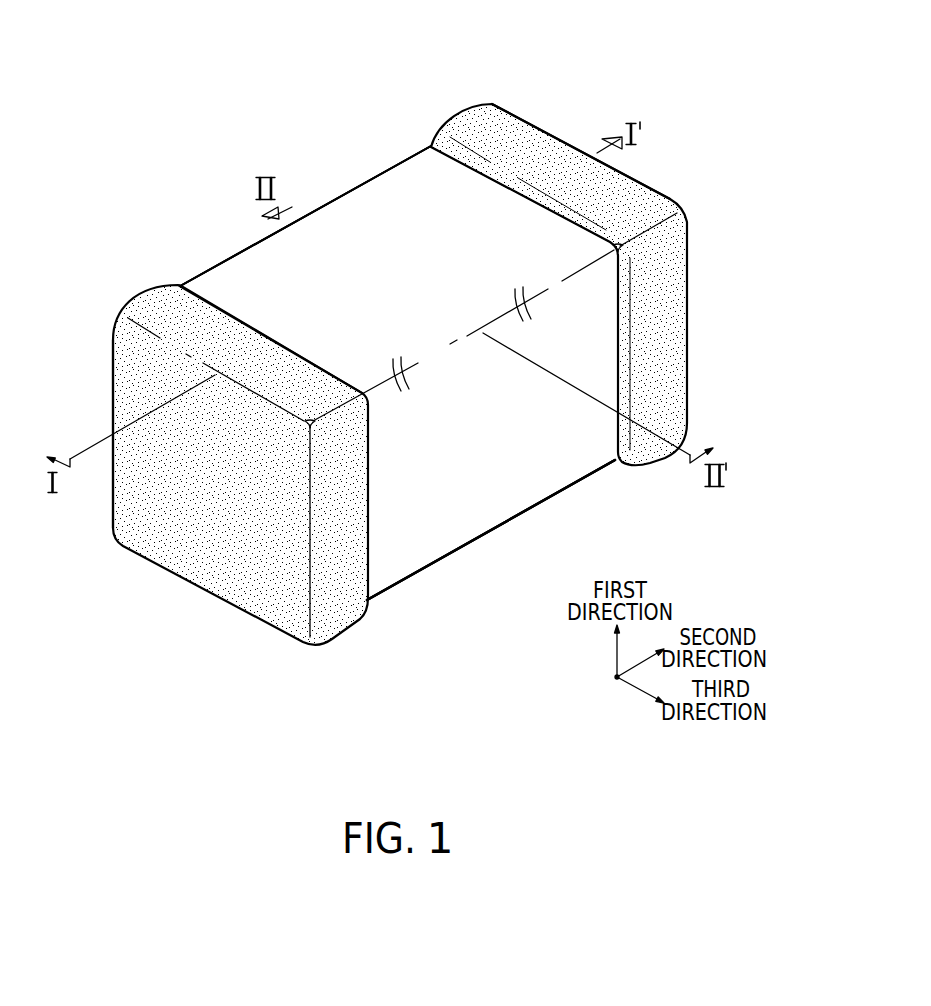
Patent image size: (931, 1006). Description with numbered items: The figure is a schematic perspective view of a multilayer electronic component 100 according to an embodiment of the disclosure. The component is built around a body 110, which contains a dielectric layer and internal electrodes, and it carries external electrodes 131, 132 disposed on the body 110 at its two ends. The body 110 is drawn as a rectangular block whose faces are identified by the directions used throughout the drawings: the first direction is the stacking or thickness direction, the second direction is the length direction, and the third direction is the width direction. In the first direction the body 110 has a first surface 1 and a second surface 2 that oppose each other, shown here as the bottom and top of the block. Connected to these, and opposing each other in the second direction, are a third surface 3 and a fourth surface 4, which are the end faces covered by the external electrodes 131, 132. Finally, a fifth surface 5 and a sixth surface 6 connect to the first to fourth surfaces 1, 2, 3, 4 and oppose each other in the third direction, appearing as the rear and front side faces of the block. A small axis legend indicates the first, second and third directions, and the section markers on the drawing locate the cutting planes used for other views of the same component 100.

The multilayer electronic component 100 is at (241, 42).
The body 110 is at (341, 213).
The first surface 1 is at (459, 556).
The second surface 2 is at (385, 190).
The third surface 3 is at (157, 550).
The fourth surface 4 is at (560, 144).
The fifth surface 5 is at (232, 258).
The sixth surface 6 is at (522, 487).
The external electrode 131 is at (235, 436).
The external electrode 132 is at (559, 254).